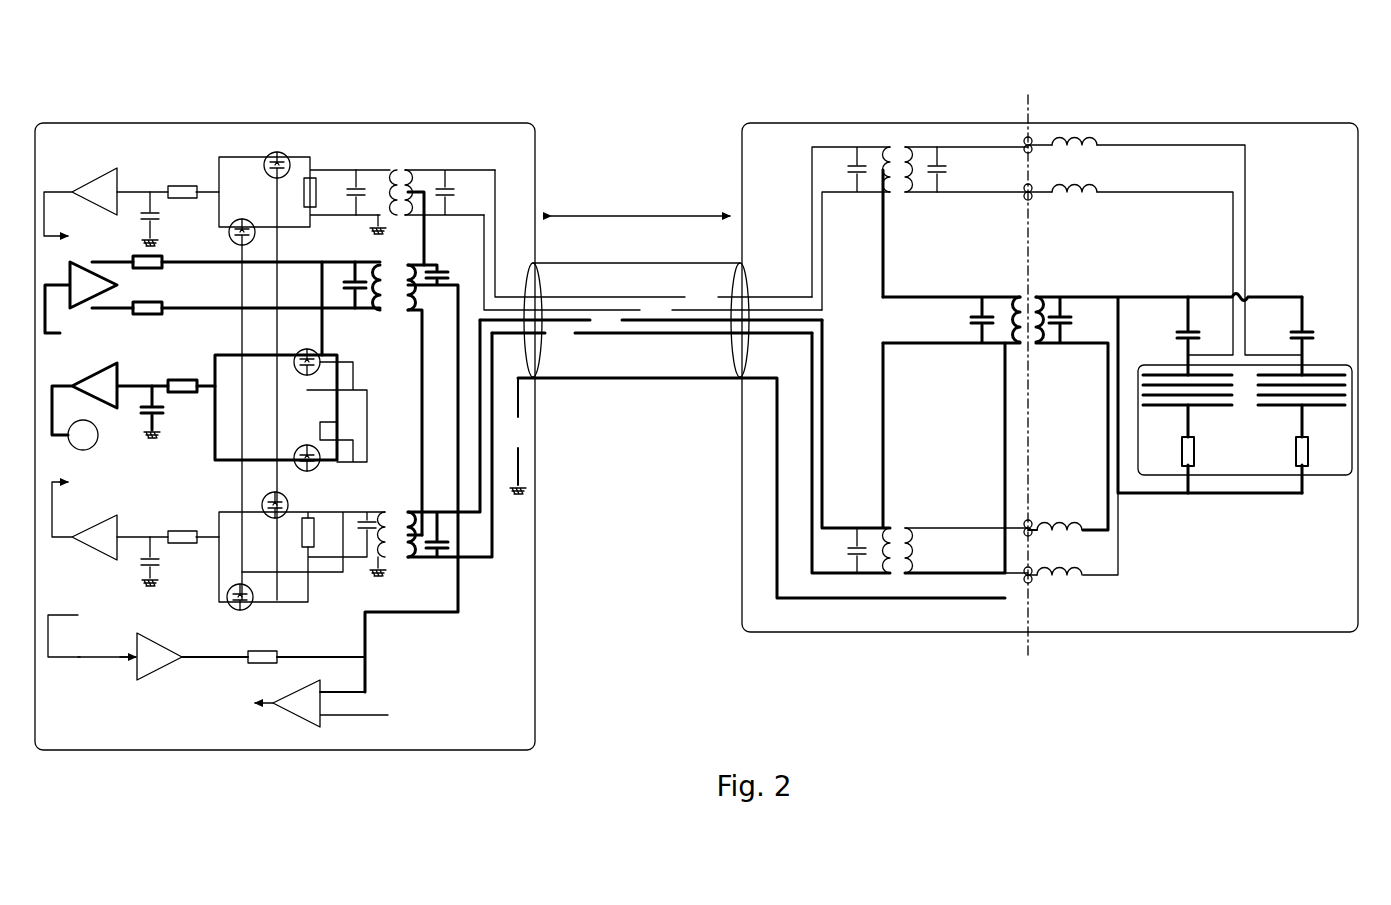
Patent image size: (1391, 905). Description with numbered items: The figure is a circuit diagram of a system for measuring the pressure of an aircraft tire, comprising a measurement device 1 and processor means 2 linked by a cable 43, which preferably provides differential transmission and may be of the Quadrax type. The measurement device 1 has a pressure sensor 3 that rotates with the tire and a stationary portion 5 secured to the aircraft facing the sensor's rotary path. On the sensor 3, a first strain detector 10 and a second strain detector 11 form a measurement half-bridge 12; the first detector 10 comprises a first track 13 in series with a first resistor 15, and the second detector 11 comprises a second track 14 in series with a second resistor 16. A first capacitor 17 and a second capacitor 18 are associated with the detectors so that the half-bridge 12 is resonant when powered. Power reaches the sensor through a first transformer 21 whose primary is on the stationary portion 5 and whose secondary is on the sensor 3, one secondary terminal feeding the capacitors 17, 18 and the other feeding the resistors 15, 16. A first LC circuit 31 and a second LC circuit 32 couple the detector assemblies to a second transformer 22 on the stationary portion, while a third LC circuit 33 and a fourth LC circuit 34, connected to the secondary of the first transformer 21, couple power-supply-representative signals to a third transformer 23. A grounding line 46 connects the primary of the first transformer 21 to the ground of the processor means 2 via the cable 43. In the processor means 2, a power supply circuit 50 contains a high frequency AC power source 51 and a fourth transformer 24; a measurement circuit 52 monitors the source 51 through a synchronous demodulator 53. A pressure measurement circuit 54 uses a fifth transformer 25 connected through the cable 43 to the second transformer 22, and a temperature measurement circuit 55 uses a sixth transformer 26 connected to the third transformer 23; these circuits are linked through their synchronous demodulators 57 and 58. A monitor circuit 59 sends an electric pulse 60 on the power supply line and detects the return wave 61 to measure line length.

The measurement device 1 is at (1183, 62).
The processor means 2 is at (185, 123).
The pressure sensor 3 is at (1228, 123).
The stationary portion 5 is at (890, 123).
The first strain detector 10 is at (1154, 376).
The second strain detector 11 is at (1314, 376).
The measurement half-bridge 12 is at (1315, 478).
The first track 13 is at (1166, 372).
The second track 14 is at (1312, 370).
The first resistor 15 is at (1196, 445).
The second resistor 16 is at (1284, 448).
The first capacitor 17 is at (1192, 297).
The second capacitor 18 is at (1300, 297).
The first transformer 21 is at (1025, 292).
The second transformer 22 is at (905, 197).
The third transformer 23 is at (903, 524).
The fourth transformer 24 is at (412, 318).
The fifth transformer 25 is at (400, 165).
The sixth transformer 26 is at (402, 508).
The first LC circuit 31 is at (1148, 192).
The second LC circuit 32 is at (1122, 147).
The third LC circuit 33 is at (1120, 540).
The fourth LC circuit 34 is at (1093, 528).
The cable 43 is at (700, 420).
The line 46 is at (940, 600).
The power supply circuit 50 is at (162, 322).
The high frequency AC power source 51 is at (100, 440).
The measurement circuit 52 is at (175, 433).
The synchronous demodulator 53 is at (355, 460).
The pressure measurement circuit 54 is at (155, 170).
The temperature measurement circuit 55 is at (175, 578).
The synchronous demodulator 57 is at (247, 157).
The synchronous demodulator 58 is at (310, 602).
The monitor circuit 59 is at (205, 672).
The electric pulse 60 is at (105, 660).
The return wave 61 is at (272, 712).